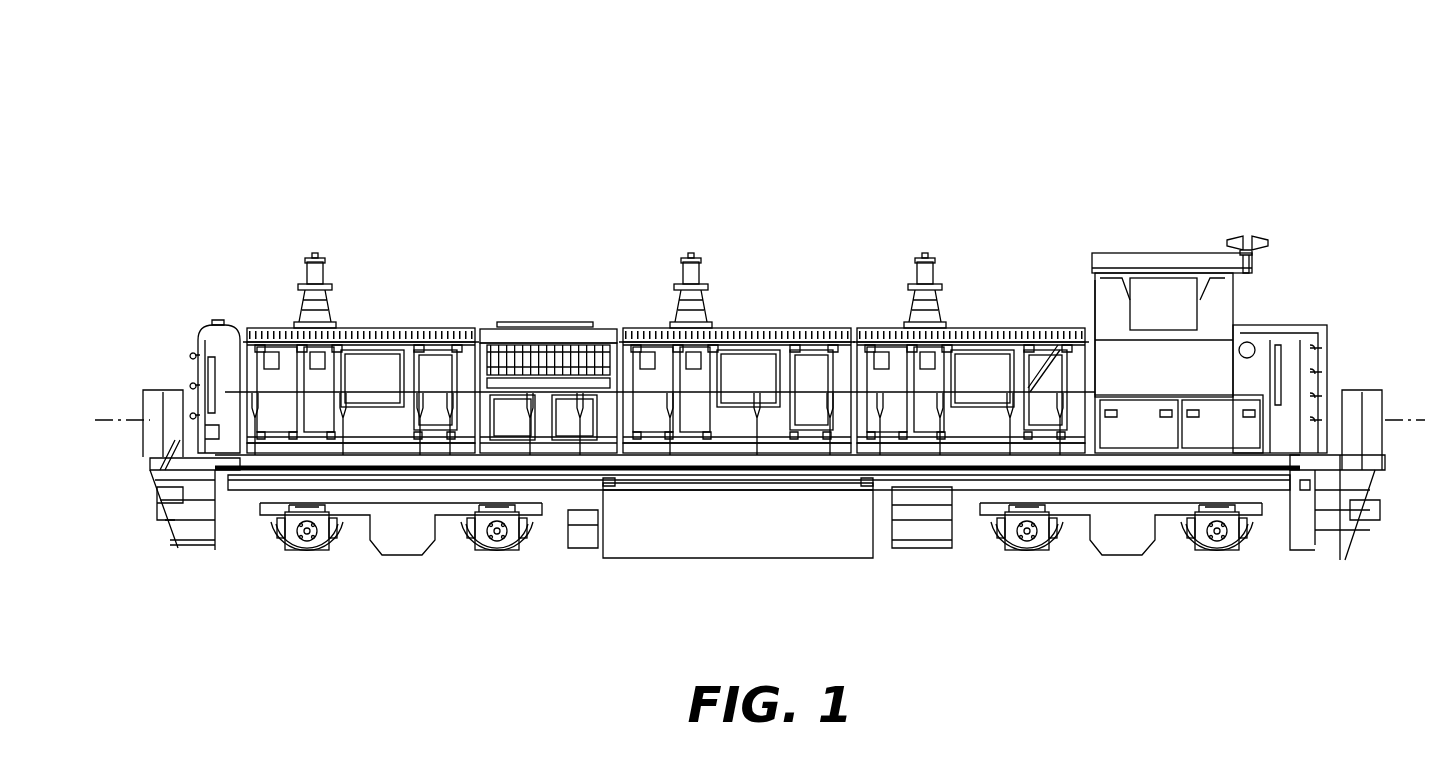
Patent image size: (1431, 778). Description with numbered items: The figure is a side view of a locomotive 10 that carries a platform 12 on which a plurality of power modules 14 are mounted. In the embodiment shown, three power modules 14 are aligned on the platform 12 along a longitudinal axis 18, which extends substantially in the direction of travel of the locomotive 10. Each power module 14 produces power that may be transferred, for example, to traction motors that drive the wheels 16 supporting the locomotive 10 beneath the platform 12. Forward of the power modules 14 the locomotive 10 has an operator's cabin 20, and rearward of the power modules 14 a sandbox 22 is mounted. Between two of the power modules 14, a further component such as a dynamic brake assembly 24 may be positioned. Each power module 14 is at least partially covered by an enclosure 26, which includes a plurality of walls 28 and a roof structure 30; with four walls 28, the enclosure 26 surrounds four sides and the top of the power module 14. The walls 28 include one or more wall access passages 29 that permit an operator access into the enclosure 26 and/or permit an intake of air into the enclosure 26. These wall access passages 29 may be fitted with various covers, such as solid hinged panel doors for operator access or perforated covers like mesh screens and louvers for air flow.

The locomotive 10 is at (708, 103).
The platform 12 is at (722, 470).
The power module 14 is at (353, 199).
The wheels 16 is at (305, 570).
The longitudinal axis 18 is at (1385, 422).
The operator's cabin 20 is at (1160, 255).
The sandbox 22 is at (215, 335).
The dynamic brake assembly 24 is at (545, 320).
The enclosure 26 is at (440, 334).
The walls 28 is at (380, 345).
The wall access passage 29 is at (272, 420).
The roof structure 30 is at (270, 330).